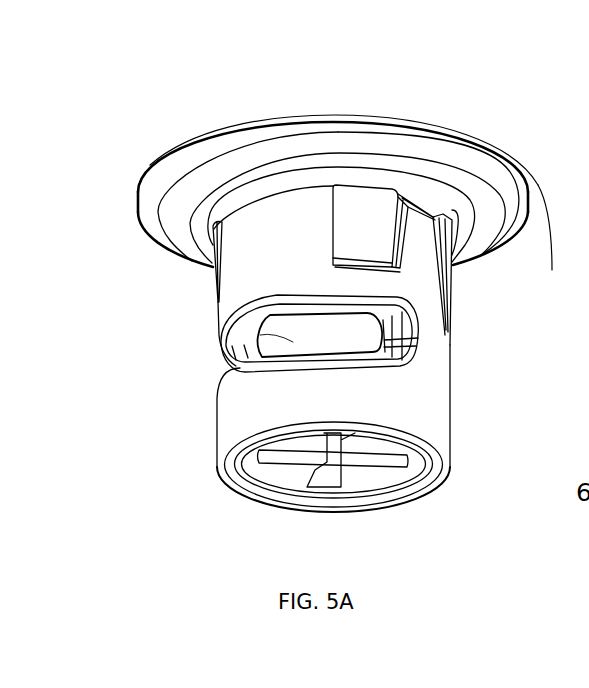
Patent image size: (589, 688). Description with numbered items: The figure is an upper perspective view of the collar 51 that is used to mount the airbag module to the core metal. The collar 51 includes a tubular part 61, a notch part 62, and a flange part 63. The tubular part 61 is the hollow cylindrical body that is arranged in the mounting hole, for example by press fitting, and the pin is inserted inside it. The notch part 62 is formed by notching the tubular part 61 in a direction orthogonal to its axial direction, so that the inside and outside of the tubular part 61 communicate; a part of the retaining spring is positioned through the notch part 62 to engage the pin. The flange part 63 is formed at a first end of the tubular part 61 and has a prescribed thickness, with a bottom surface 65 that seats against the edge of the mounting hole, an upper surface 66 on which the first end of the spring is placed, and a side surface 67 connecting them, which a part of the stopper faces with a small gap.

The collar 51 is at (398, 101).
The upper surface 66 is at (242, 119).
The flange part 63 is at (172, 177).
The bottom surface 65 is at (148, 217).
The side surface 67 is at (552, 270).
The tubular part 61 is at (432, 392).
The notch part 62 is at (248, 341).